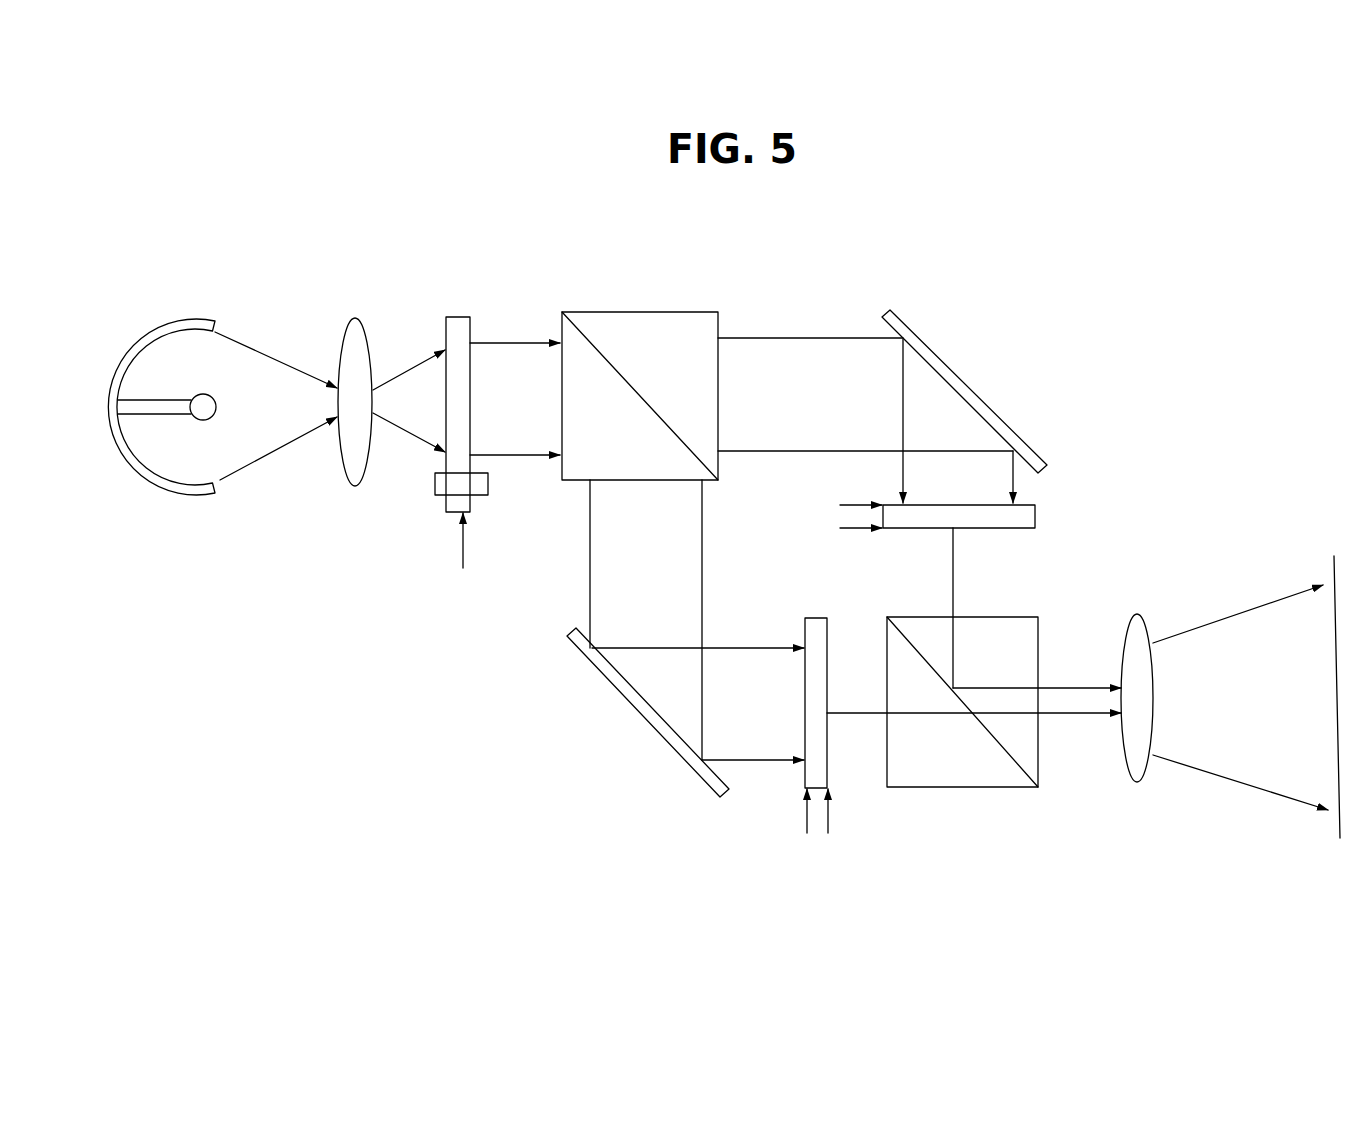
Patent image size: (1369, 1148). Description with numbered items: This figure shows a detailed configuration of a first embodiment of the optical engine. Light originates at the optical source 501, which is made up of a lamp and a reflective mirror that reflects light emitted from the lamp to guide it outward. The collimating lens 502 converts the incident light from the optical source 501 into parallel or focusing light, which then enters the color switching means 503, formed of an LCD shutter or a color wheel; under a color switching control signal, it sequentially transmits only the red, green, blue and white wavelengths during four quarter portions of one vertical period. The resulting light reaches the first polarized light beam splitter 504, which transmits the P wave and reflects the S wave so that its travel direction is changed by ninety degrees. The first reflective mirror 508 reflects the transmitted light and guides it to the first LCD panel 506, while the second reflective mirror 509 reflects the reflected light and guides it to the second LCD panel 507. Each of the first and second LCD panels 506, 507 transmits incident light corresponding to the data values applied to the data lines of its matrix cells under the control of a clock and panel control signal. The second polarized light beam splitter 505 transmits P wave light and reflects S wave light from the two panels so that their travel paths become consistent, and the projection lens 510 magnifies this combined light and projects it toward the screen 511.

The optical source 501 is at (177, 325).
The collimating lens 502 is at (355, 318).
The color switching means 503 is at (465, 317).
The first polarized light beam splitter 504 is at (640, 312).
The second polarized light beam splitter 505 is at (973, 787).
The first LCD panel 506 is at (1035, 515).
The second LCD panel 507 is at (814, 618).
The first reflective mirror 508 is at (970, 388).
The second reflective mirror 509 is at (642, 720).
The projection lens 510 is at (1137, 615).
The screen 511 is at (1334, 556).